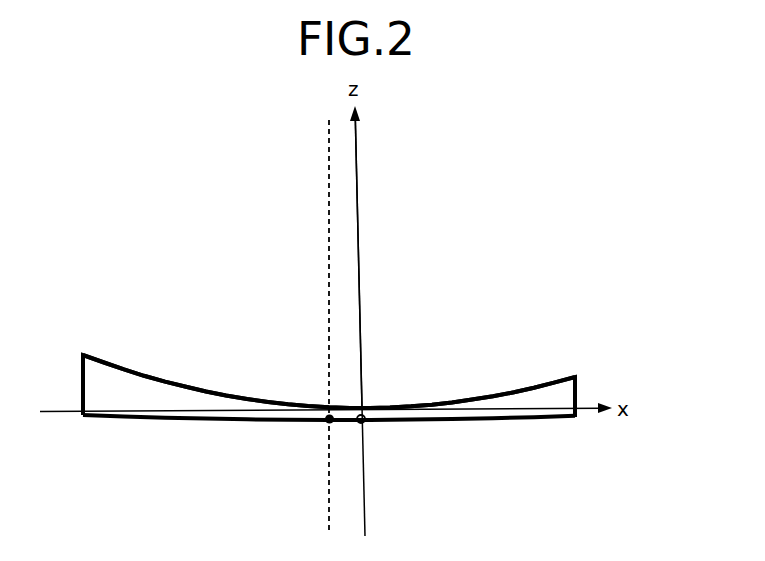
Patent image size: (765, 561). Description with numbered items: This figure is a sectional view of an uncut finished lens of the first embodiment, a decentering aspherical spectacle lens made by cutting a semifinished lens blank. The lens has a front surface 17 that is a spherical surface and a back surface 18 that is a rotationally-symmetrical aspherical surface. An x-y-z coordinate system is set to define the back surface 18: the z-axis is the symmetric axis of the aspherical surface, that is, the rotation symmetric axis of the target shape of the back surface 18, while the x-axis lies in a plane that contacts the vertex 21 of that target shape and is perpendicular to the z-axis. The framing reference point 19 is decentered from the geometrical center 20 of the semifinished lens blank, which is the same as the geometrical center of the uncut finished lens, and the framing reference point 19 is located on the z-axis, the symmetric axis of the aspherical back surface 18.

The front surface 17 is at (498, 422).
The back surface 18 is at (180, 385).
The framing reference point 19 is at (364, 421).
The geometrical center 20 is at (327, 421).
The vertex 21 is at (360, 411).